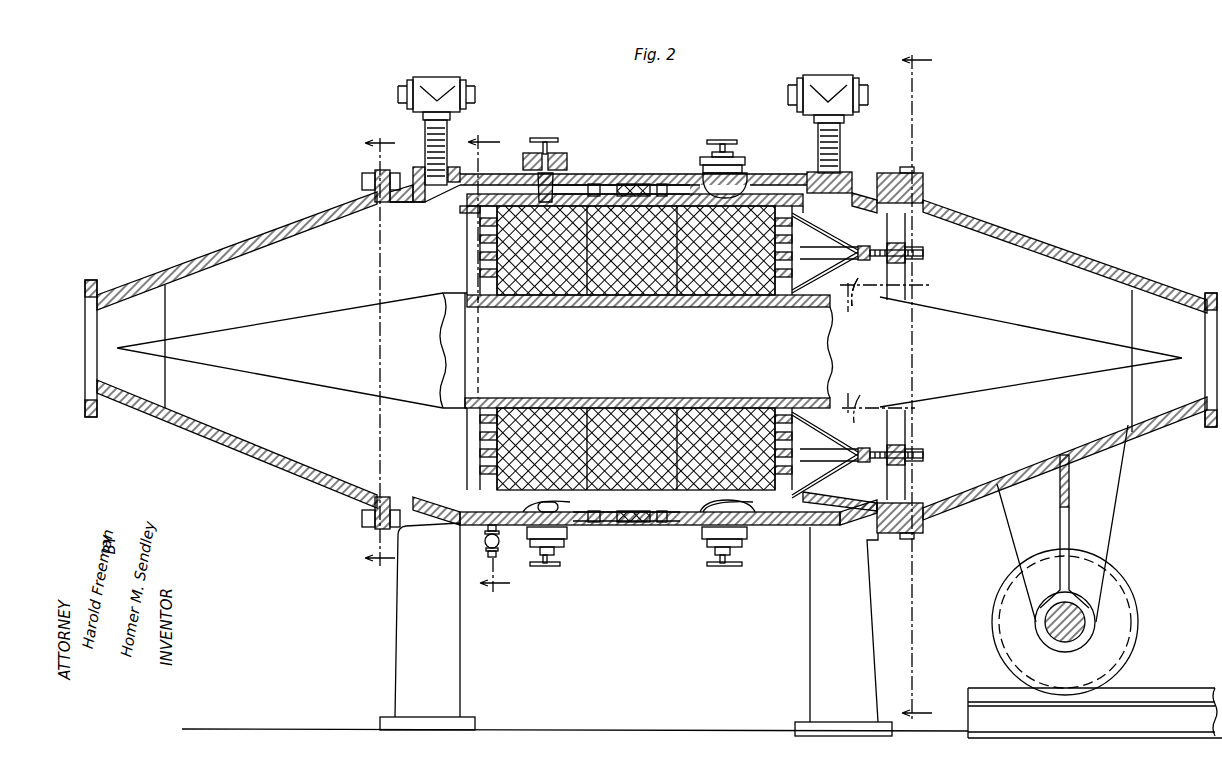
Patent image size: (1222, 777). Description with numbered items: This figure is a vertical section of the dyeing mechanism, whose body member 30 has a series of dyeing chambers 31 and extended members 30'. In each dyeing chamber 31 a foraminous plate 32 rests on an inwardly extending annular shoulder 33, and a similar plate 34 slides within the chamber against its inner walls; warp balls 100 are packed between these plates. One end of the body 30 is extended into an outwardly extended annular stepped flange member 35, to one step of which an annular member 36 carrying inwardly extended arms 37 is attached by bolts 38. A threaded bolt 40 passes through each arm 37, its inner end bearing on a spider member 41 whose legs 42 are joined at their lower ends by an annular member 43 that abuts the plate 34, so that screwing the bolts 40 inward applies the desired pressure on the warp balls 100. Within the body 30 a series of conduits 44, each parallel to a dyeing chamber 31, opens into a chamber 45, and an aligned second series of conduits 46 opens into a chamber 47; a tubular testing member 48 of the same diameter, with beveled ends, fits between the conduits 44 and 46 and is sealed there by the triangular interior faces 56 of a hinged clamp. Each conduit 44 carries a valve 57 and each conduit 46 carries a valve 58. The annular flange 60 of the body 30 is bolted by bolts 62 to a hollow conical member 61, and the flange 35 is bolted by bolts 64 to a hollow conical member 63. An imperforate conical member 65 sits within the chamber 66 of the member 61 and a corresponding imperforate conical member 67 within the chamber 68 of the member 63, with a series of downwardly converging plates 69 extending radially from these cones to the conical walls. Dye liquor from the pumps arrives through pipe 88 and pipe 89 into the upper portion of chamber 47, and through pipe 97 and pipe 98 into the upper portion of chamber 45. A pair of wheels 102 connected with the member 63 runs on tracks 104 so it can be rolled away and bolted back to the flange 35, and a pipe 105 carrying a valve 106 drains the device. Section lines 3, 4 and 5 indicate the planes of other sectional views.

The section line 3- 3 is at (926, 387).
The section line 4- 4 is at (489, 373).
The section line 5- 5 is at (372, 351).
The body member 30 is at (645, 531).
The extended members 30' is at (598, 172).
The dyeing chambers 31 is at (730, 298).
The foraminous plate 32 is at (490, 200).
The annular shoulder 33 is at (462, 217).
The plate 34 is at (780, 308).
The annular stepped flange member 35 is at (856, 174).
The annular member 36 is at (924, 192).
The inwardly extended arms 37 is at (903, 230).
The bolts 38 is at (880, 204).
The threaded bolt 40 is at (924, 255).
The spider member 41 is at (829, 346).
The legs 42 is at (825, 353).
The annular member 43 is at (795, 348).
The conduits 44 is at (575, 184).
The chamber 45 is at (427, 221).
The conduits 46 is at (760, 176).
The chamber 47 is at (885, 387).
The tubular testing member 48 is at (624, 183).
The interior faces 56 is at (597, 183).
The valve 57 is at (552, 152).
The valve 58 is at (695, 165).
The annular flange 60 is at (385, 172).
The hollow conical member 61 is at (278, 232).
The bolts 62 is at (362, 177).
The hollow conical member 63 is at (1025, 250).
The bolts 64 is at (914, 172).
The imperforate conical member 65 is at (292, 350).
The chamber 66 is at (138, 305).
The imperforate conical member 67 is at (1031, 352).
The chamber 68 is at (1148, 310).
The downwardly converging plates 69 is at (664, 349).
The pipe 88 is at (823, 78).
The pipe 89 is at (818, 134).
The pipe 97 is at (437, 76).
The pipe 98 is at (449, 140).
The warp balls 100 is at (637, 398).
The wheels 102 is at (1125, 612).
The tracks 104 is at (1160, 688).
The pipe 105 is at (485, 554).
The valve 106 is at (505, 551).